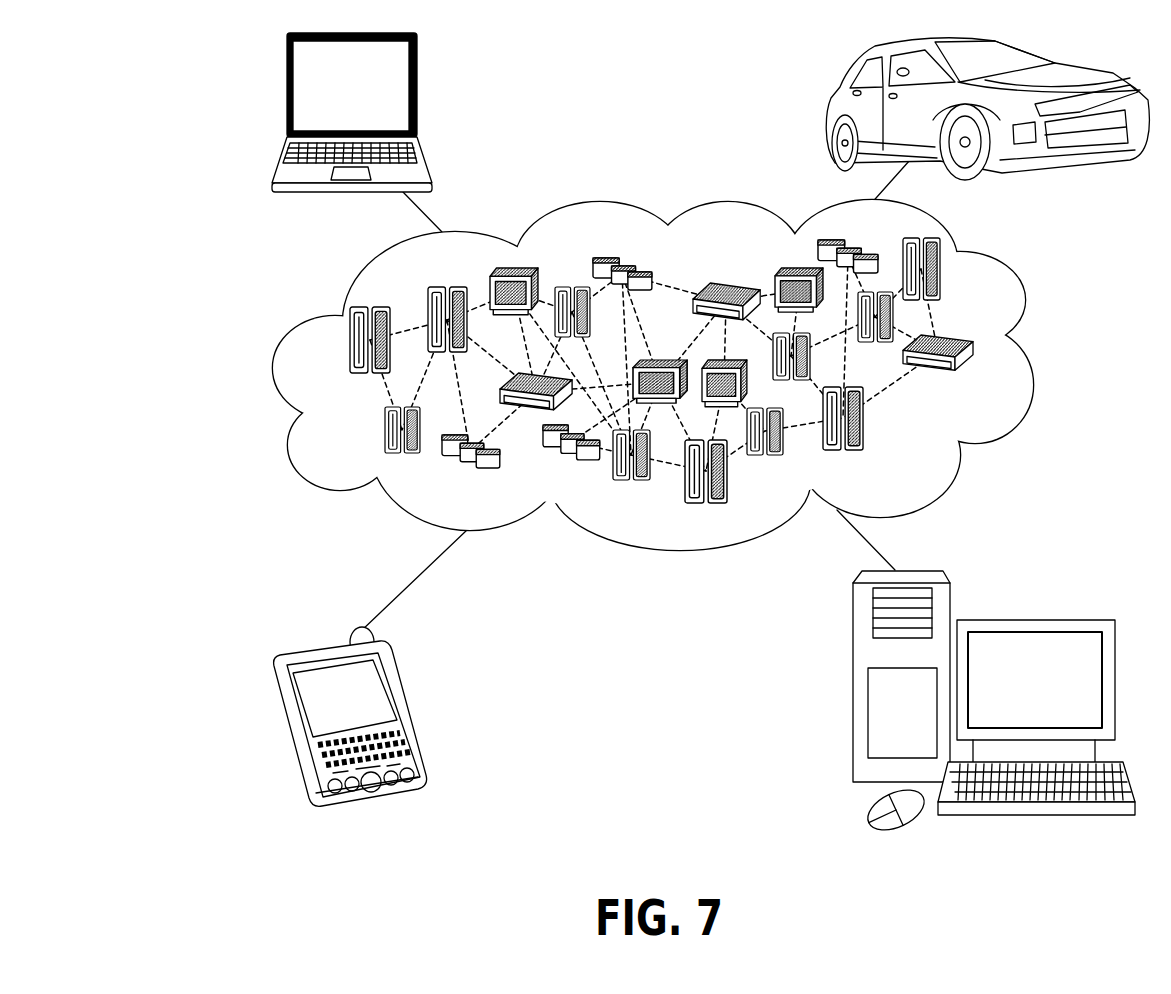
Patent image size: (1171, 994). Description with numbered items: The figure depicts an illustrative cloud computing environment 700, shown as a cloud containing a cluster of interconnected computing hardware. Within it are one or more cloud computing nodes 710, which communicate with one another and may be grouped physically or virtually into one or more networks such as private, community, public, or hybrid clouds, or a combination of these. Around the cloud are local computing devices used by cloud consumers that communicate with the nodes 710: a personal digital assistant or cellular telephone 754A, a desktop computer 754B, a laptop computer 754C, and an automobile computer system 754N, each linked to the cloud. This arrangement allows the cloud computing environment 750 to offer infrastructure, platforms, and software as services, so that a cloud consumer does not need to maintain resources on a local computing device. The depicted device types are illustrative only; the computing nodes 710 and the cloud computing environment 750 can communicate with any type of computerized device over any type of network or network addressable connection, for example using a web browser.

The cloud computing environment 700 is at (128, 61).
The cloud computing environment 750 is at (1030, 347).
The cloud computing nodes 710 is at (717, 370).
The personal digital assistant or cellular telephone 754A is at (407, 709).
The desktop computer 754B is at (1035, 620).
The laptop computer 754C is at (418, 96).
The automobile computer system 754N is at (829, 118).